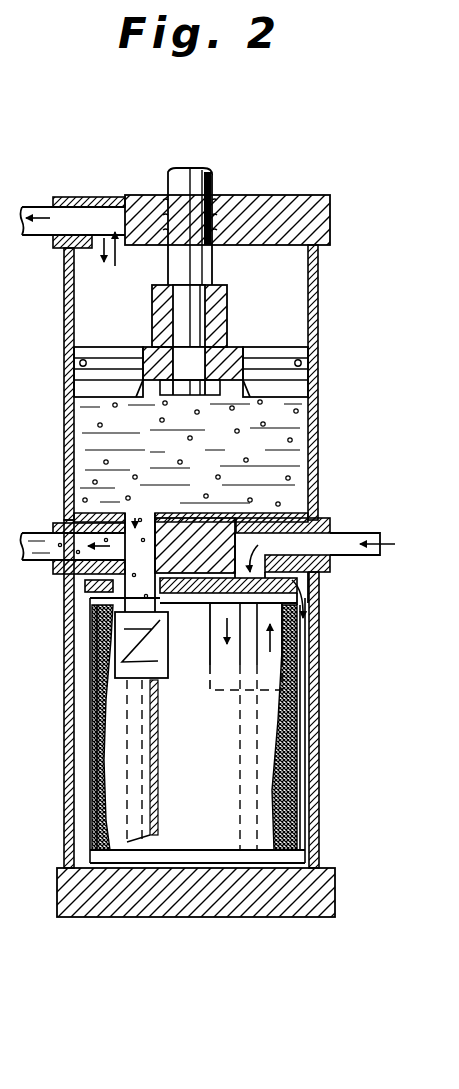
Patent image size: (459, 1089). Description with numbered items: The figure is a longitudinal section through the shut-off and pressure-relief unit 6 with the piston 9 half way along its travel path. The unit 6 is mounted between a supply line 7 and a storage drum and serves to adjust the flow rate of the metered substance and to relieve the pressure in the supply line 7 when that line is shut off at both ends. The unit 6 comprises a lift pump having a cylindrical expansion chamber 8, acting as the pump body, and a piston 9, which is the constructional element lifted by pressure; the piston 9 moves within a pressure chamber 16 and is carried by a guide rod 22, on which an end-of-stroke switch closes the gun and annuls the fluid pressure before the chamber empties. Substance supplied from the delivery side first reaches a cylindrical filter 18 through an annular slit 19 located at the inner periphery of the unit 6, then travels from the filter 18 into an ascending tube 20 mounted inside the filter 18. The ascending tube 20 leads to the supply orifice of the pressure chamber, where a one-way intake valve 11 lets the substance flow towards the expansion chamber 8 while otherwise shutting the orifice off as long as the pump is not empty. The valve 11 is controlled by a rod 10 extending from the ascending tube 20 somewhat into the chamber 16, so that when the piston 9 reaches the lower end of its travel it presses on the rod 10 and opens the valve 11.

The shut-off and pressure-relief supply unit 6 is at (293, 672).
The supply line 7 is at (40, 543).
The cylindrical expansion chamber 8 is at (314, 320).
The piston 9 is at (290, 372).
The rod 10 is at (112, 584).
The intake valve 11 is at (125, 654).
The pressure chamber 16 is at (295, 460).
The cylindrical filter 18 is at (297, 703).
The annular slit 19 is at (303, 762).
The ascending tube 20 is at (118, 769).
The guide rod 22 is at (214, 181).